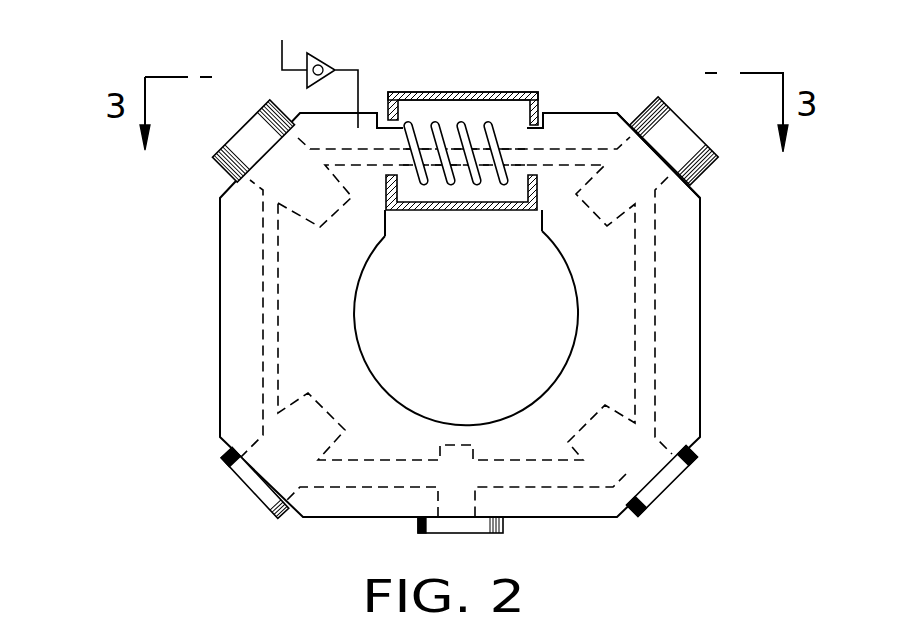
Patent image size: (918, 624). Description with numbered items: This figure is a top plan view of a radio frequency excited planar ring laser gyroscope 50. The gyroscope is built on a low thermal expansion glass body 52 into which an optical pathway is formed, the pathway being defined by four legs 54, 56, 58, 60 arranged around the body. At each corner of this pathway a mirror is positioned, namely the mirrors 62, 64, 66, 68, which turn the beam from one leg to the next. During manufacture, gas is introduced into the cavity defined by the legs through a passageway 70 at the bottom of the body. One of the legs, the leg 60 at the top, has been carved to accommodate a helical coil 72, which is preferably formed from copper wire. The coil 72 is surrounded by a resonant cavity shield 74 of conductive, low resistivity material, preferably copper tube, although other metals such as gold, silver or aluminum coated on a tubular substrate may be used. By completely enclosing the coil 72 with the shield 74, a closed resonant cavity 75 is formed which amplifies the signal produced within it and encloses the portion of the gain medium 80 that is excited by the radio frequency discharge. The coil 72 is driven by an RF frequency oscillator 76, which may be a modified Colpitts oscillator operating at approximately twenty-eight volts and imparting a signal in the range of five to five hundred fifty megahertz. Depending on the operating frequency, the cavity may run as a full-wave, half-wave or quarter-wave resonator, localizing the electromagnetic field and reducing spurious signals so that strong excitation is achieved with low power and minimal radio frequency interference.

The radio frequency excited planar ring laser gyroscope 50 is at (685, 308).
The low thermal expansion glass body 52 is at (245, 365).
The leg 54 is at (268, 262).
The leg 56 is at (553, 470).
The leg 58 is at (645, 232).
The leg 60 is at (593, 152).
The mirror 62 is at (243, 123).
The mirror 64 is at (247, 483).
The mirror 66 is at (685, 483).
The mirror 68 is at (730, 115).
The passageway 70 is at (453, 495).
The helical coil 72 is at (495, 120).
The resonant cavity shield 74 is at (428, 92).
The resonant cavity 75 is at (463, 107).
The RF frequency oscillator 76 is at (317, 62).
The gain medium 80 is at (527, 157).